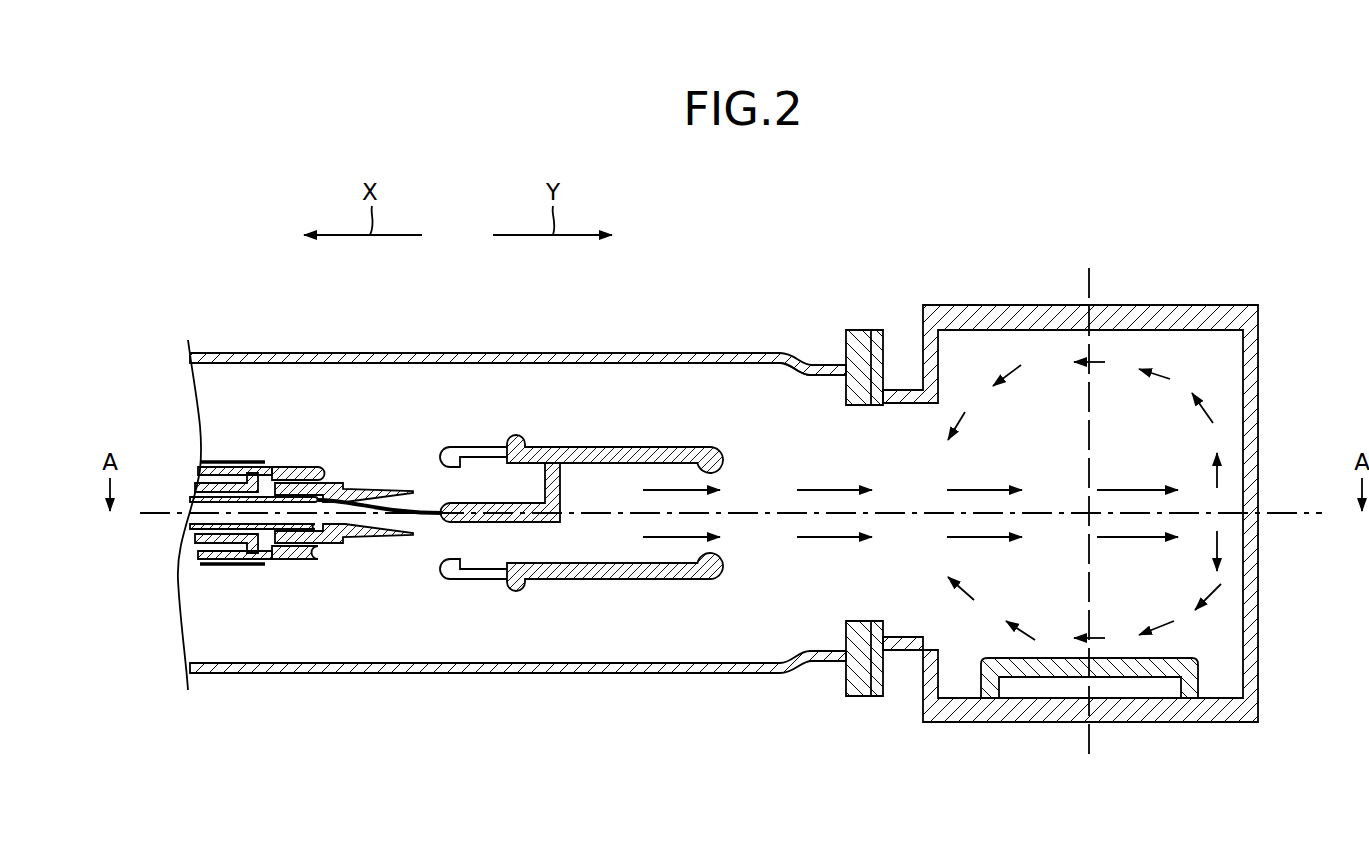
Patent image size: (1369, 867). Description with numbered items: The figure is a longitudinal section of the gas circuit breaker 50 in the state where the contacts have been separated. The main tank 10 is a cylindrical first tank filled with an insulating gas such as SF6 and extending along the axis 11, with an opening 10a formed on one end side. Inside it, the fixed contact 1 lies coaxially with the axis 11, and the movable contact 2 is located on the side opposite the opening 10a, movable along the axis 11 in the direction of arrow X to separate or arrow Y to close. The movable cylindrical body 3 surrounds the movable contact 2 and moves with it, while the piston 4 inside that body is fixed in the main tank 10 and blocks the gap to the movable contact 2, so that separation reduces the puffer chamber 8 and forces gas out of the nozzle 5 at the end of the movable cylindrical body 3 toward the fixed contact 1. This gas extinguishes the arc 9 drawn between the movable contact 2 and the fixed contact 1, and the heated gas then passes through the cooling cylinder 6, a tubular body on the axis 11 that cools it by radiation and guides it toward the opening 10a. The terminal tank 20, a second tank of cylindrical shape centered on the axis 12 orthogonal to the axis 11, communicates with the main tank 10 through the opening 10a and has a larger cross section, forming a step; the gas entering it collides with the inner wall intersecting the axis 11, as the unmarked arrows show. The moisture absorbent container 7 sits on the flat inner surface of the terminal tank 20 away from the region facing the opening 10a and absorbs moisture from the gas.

The fixed contact 1 is at (480, 503).
The movable contact 2 is at (280, 480).
The movable cylindrical body 3 is at (286, 550).
The piston 4 is at (215, 552).
The nozzle 5 is at (360, 542).
The cooling cylinder 6 is at (620, 447).
The moisture absorbent container 7 is at (988, 668).
The puffer chamber 8 is at (203, 467).
The arc 9 is at (424, 522).
The main tank 10 is at (398, 353).
The opening 10a is at (840, 392).
The axis 11 is at (1298, 513).
The axis 12 is at (1092, 288).
The terminal tank 20 is at (1212, 305).
The gas circuit breaker 50 is at (722, 231).